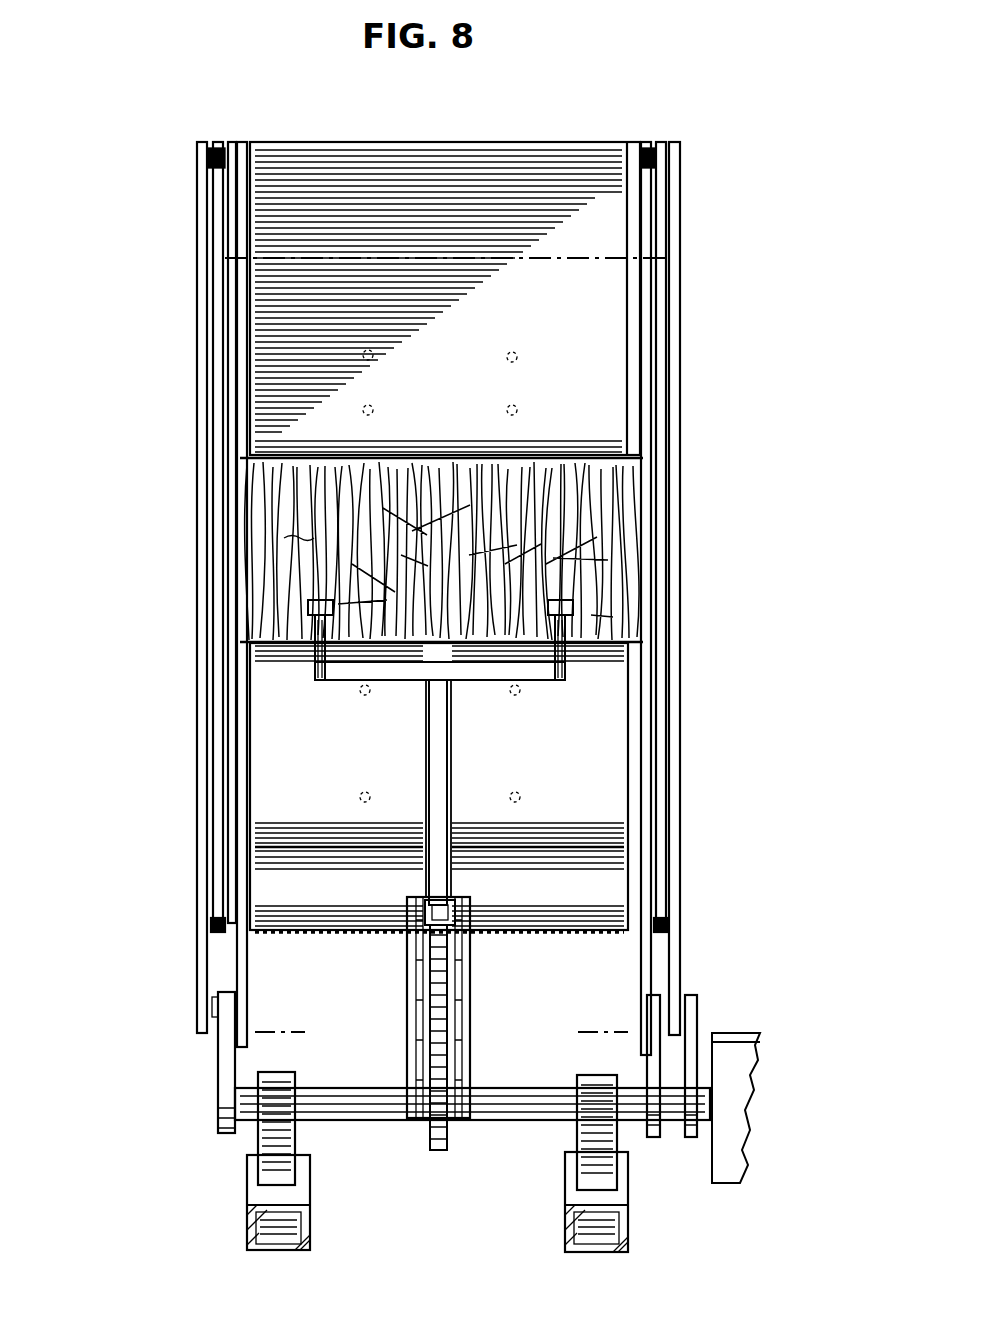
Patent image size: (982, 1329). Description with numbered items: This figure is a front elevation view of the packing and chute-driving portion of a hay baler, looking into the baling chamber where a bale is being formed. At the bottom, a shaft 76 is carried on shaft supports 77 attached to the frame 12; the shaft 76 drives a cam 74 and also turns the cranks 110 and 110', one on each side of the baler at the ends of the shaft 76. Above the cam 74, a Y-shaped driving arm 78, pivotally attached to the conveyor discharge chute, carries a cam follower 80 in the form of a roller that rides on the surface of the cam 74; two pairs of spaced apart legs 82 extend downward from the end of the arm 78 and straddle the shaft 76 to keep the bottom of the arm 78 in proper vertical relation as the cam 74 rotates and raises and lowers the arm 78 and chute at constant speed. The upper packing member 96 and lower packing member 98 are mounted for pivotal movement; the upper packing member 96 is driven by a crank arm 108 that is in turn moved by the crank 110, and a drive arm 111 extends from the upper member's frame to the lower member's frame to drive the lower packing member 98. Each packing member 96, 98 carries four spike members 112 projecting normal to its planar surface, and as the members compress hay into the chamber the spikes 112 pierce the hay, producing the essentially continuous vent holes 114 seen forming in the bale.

The frame 12 is at (303, 1197).
The cam 74 is at (436, 1150).
The shaft 76 is at (520, 1068).
The shaft support 77 is at (293, 1140).
The driving arm 78 is at (470, 688).
The cam follower 80 is at (445, 893).
The legs 82 is at (410, 1023).
The upper packing member 96 is at (570, 309).
The lower packing member 98 is at (398, 755).
The crank arm 108 is at (235, 928).
The crank 110 is at (703, 1118).
The crank 110' is at (146, 1062).
The drive arm 111 is at (222, 143).
The spike members 112 is at (516, 410).
The vent holes 114 is at (518, 580).